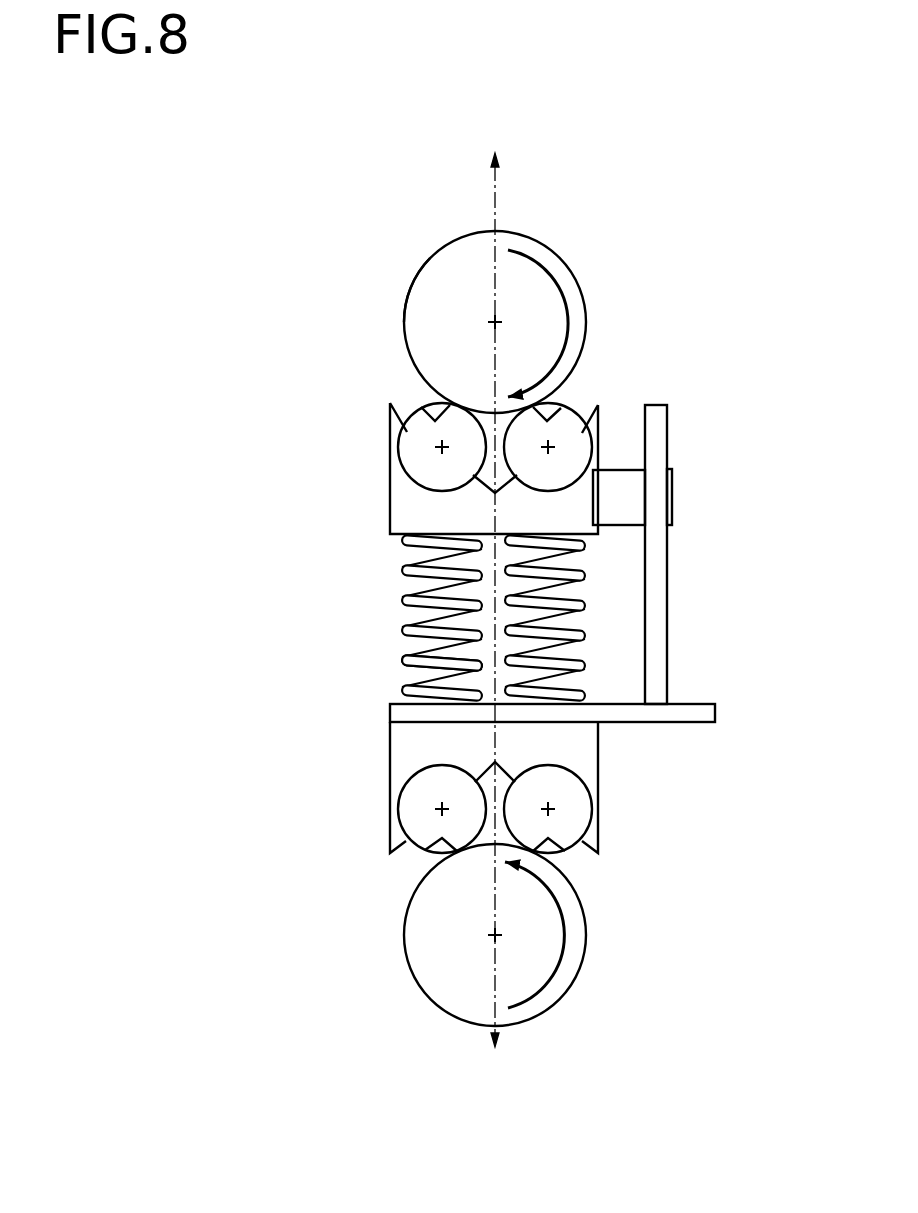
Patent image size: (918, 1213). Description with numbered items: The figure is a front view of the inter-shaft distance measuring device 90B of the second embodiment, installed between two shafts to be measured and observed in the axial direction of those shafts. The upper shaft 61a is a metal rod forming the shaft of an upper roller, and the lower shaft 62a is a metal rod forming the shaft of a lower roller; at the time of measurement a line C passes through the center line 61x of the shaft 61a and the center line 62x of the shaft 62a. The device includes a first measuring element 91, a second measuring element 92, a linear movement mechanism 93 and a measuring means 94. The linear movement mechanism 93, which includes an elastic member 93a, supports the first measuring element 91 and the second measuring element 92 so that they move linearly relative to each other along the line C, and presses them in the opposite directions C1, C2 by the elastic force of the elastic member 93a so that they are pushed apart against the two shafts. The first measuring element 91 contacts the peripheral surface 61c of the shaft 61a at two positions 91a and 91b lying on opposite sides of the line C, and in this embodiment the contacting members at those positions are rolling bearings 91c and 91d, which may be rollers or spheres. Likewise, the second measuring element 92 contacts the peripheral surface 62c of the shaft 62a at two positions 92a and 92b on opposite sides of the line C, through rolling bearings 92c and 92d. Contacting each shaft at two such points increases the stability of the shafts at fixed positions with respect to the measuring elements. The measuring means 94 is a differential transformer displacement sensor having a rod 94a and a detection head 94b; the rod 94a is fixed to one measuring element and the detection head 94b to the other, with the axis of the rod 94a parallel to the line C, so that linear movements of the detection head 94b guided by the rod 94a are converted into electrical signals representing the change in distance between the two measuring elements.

The direction C1 is at (497, 581).
The direction C2 is at (498, 1057).
The line C is at (497, 252).
The shaft 61a is at (447, 263).
The peripheral surface 61c is at (402, 318).
The center line 61x is at (497, 321).
The inter-shaft distance measuring device 90B is at (474, 429).
The first measuring element 91 is at (391, 460).
The position 91a is at (435, 421).
The position 91b is at (547, 421).
The rolling bearing 91c is at (408, 442).
The rolling bearing 91d is at (580, 437).
The linear movement mechanism 93 is at (402, 601).
The elastic member 93a is at (403, 660).
The measuring means 94 is at (580, 563).
The rod 94a is at (660, 657).
The detection head 94b is at (673, 480).
The second measuring element 92 is at (397, 777).
The position 92a is at (442, 838).
The position 92b is at (548, 838).
The rolling bearing 92c is at (420, 810).
The rolling bearing 92d is at (580, 810).
The shaft 62a is at (448, 992).
The peripheral surface 62c is at (572, 938).
The center line 62x is at (497, 937).